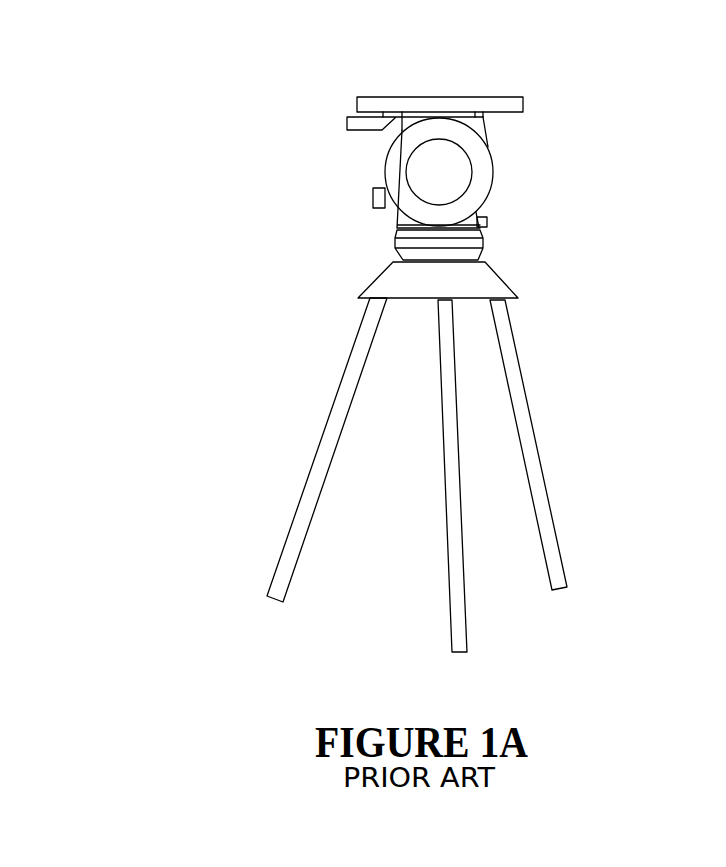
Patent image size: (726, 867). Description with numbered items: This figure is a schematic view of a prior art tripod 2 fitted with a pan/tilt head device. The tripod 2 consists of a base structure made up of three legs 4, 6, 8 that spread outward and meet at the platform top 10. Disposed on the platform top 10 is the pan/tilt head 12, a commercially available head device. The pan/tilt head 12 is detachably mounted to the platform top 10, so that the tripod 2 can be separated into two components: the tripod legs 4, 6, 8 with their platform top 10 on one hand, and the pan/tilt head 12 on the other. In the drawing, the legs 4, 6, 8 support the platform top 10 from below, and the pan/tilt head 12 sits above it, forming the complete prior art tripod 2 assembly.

The tripod 2 is at (410, 353).
The leg 4 is at (347, 407).
The leg 6 is at (453, 492).
The leg 8 is at (517, 395).
The platform top 10 is at (490, 277).
The pan/tilt head 12 is at (513, 158).